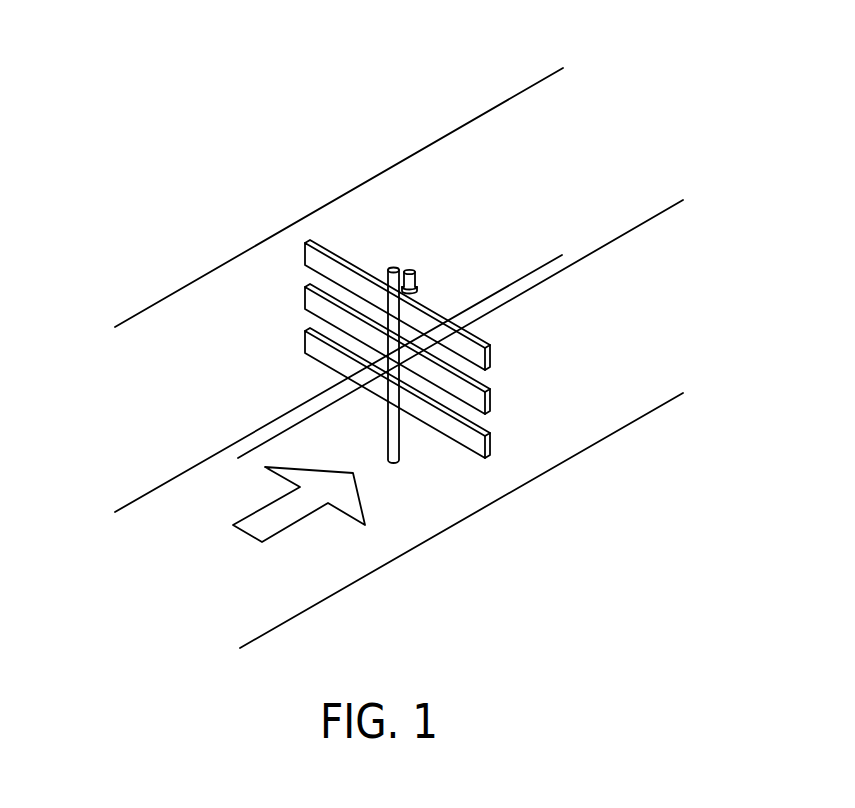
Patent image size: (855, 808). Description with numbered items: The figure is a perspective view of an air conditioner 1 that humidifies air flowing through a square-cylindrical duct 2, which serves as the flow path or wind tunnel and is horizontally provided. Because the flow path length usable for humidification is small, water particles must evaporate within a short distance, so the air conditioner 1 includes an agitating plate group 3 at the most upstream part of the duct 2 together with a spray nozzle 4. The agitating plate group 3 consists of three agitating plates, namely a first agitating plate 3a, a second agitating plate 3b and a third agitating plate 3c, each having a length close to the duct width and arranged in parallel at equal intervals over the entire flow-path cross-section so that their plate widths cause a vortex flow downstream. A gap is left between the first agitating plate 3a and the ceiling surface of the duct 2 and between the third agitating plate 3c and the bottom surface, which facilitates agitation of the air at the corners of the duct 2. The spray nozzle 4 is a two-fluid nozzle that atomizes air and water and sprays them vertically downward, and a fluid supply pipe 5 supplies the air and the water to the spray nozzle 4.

The air conditioner 1 is at (348, 150).
The duct 2 is at (153, 303).
The agitating plate group 3 is at (284, 276).
The first agitating plate 3a is at (330, 252).
The second agitating plate 3b is at (302, 300).
The third agitating plate 3c is at (302, 349).
The spray nozzle 4 is at (408, 270).
The fluid supply pipe 5 is at (398, 450).